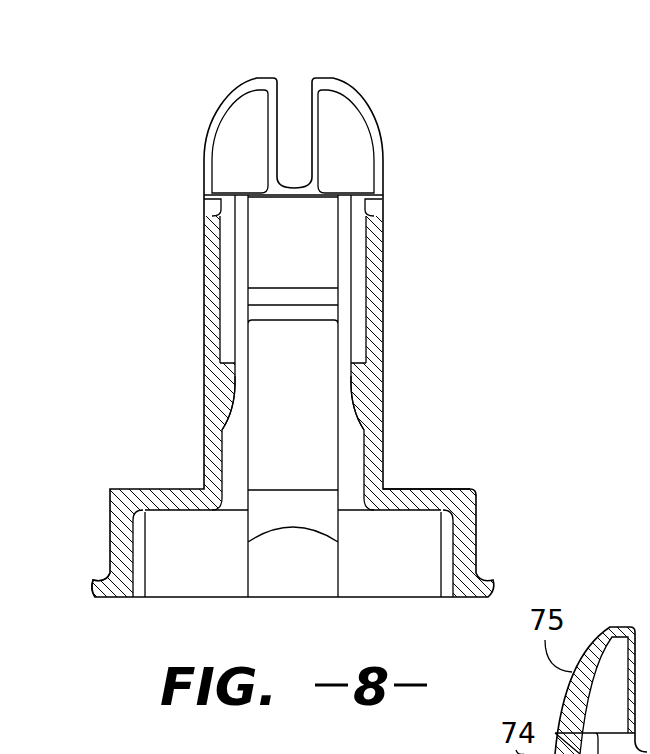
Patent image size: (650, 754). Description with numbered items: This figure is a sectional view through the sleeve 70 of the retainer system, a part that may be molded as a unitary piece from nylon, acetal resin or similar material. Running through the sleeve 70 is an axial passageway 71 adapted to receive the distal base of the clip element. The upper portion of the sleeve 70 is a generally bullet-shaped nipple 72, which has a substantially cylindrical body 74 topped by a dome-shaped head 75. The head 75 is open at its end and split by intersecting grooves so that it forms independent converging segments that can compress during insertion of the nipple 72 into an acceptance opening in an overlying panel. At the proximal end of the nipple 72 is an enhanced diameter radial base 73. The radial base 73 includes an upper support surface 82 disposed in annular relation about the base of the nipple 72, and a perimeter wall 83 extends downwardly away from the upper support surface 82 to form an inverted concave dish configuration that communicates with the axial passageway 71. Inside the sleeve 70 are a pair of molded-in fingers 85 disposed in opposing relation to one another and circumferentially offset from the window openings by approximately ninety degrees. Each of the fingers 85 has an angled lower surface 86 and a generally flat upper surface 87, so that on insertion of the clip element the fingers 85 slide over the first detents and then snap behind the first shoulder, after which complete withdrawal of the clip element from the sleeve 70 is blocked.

The sleeve 70 is at (389, 81).
The axial passageway 71 is at (278, 258).
The nipple 72 is at (422, 382).
The radial base 73 is at (480, 543).
The cylindrical body 74 is at (203, 267).
The head 75 is at (227, 112).
The upper support surface 82 is at (455, 486).
The perimeter wall 83 is at (108, 538).
The fingers 85 is at (226, 378).
The angled lower surface 86 is at (226, 418).
The flat upper surface 87 is at (226, 357).